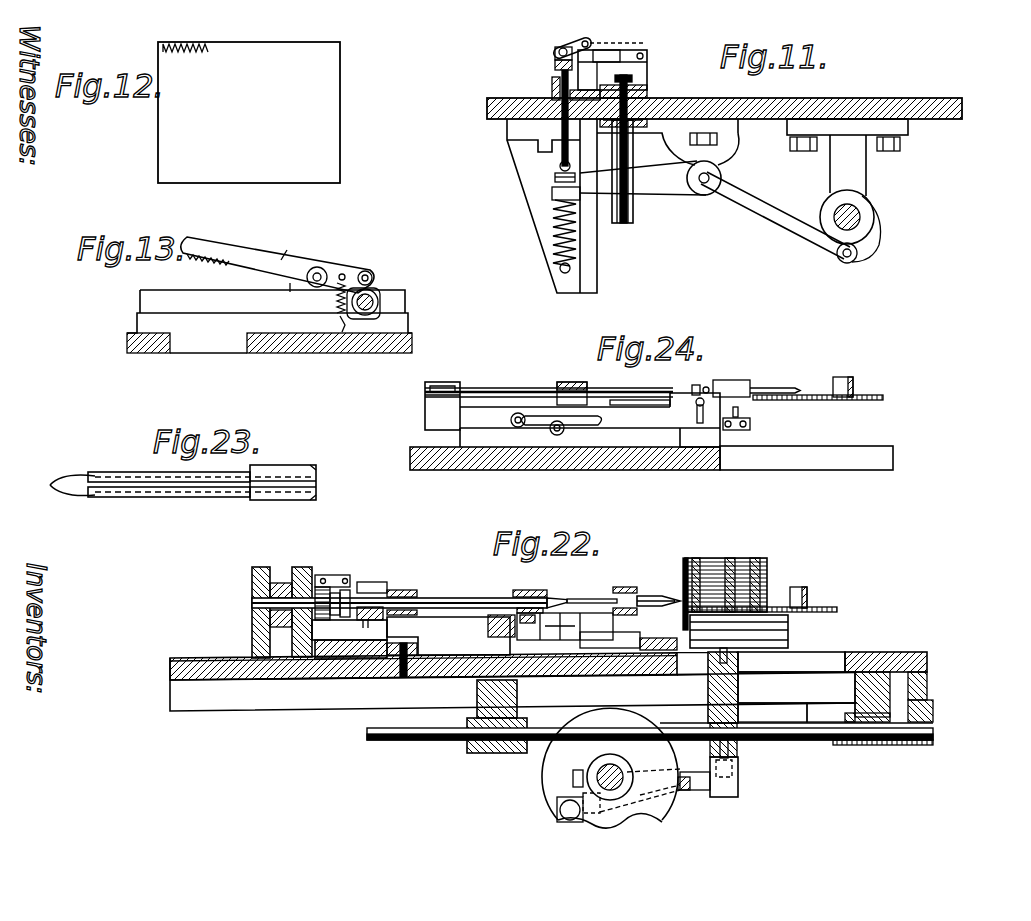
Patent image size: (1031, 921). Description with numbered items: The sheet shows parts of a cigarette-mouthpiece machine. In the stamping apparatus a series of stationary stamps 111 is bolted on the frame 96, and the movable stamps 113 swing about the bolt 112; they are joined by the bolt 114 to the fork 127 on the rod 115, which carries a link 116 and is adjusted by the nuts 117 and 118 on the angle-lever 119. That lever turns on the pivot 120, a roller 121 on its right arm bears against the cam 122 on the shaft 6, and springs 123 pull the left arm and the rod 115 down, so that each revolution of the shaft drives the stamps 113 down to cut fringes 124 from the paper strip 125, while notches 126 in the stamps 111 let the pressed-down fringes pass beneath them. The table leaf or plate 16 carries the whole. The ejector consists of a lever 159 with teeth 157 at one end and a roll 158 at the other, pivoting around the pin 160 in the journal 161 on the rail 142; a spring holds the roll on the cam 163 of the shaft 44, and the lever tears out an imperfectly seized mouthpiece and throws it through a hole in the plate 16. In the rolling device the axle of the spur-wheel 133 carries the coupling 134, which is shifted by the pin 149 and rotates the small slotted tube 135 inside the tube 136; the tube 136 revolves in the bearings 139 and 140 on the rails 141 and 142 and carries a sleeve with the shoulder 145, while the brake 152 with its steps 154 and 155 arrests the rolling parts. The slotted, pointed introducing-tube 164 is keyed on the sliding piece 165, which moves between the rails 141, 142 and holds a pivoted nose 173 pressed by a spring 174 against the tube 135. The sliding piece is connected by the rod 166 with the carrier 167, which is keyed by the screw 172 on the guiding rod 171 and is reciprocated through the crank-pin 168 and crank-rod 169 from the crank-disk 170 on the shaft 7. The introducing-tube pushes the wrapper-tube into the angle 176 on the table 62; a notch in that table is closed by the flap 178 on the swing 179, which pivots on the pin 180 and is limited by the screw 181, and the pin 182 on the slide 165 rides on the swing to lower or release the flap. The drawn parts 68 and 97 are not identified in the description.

In FIG. 11, the shaft 6 is at (835, 212).
In FIG. 22, the shaft 7 is at (626, 771).
In FIG. 11, the table leaf or plate 16 is at (805, 108).
In FIG. 13, the table leaf or plate 16 is at (165, 345).
In FIG. 13, the shaft 44 is at (379, 302).
In FIG. 24, the table 62 is at (845, 400).
In FIG. 22, the table 62 is at (843, 612).
In FIG. 22, the drum 68 is at (735, 558).
In FIG. 11, the frame 96 is at (647, 82).
In FIG. 11, the vertical rod 97 is at (631, 150).
In FIG. 11, the stamps 111 is at (650, 62).
In FIG. 11, the bolt 112 is at (592, 40).
In FIG. 11, the movable stamps 113 is at (576, 41).
In FIG. 11, the bolt 114 is at (558, 45).
In FIG. 11, the rod 115 is at (560, 130).
In FIG. 11, the link 116 is at (558, 165).
In FIG. 11, the nut 117 is at (553, 178).
In FIG. 11, the nut 118 is at (552, 200).
In FIG. 11, the angle-lever 119 is at (650, 185).
In FIG. 11, the pivot 120 is at (718, 172).
In FIG. 11, the roller 121 is at (849, 262).
In FIG. 11, the cam 122 is at (868, 222).
In FIG. 11, the springs 123 is at (556, 236).
In FIG. 11, the fringes 124 is at (628, 42).
In FIG. 12, the fringes 124 is at (200, 34).
In FIG. 11, the paper strip 125 is at (648, 52).
In FIG. 11, the notches 126 is at (610, 68).
In FIG. 11, the fork 127 is at (556, 65).
In FIG. 22, the spur-wheel 133 is at (254, 590).
In FIG. 22, the coupling 134 is at (327, 574).
In FIG. 24, the small slotted tube 135 is at (625, 386).
In FIG. 22, the small slotted tube 135 is at (590, 594).
In FIG. 24, the tube 136 is at (515, 393).
In FIG. 22, the tube 136 is at (505, 597).
In FIG. 22, the bearing 139 is at (464, 598).
In FIG. 22, the bearing 140 is at (575, 592).
In FIG. 13, the rail 141 is at (269, 311).
In FIG. 22, the rail 141 is at (465, 625).
In FIG. 24, the rail 142 is at (423, 409).
In FIG. 22, the shoulder 145 is at (349, 639).
In FIG. 22, the pin 149 is at (345, 578).
In FIG. 22, the brake 152 is at (362, 590).
In FIG. 22, the step 154 is at (374, 590).
In FIG. 22, the step 155 is at (382, 596).
In FIG. 13, the teeth 157 is at (235, 242).
In FIG. 13, the roll 158 is at (372, 278).
In FIG. 13, the lever 159 is at (295, 244).
In FIG. 13, the pin 160 is at (320, 269).
In FIG. 13, the journal 161 is at (290, 283).
In FIG. 13, the cam 163 is at (361, 338).
In FIG. 24, the introducing-tube 164 is at (795, 392).
In FIG. 23, the introducing-tube 164 is at (162, 487).
In FIG. 22, the introducing-tube 164 is at (660, 586).
In FIG. 24, the sliding piece 165 is at (660, 400).
In FIG. 22, the sliding piece 165 is at (535, 590).
In FIG. 22, the rod 166 is at (705, 656).
In FIG. 22, the support or carrier 167 is at (796, 687).
In FIG. 22, the crank-pin 168 is at (739, 788).
In FIG. 22, the crank-rod 169 is at (692, 791).
In FIG. 22, the crank-disk 170 is at (652, 806).
In FIG. 22, the rod 171 is at (423, 740).
In FIG. 22, the screw 172 is at (738, 757).
In FIG. 22, the pivoted nose or shoulder 173 is at (628, 640).
In FIG. 22, the spring 174 is at (575, 652).
In FIG. 24, the angle 176 is at (854, 382).
In FIG. 22, the angle 176 is at (804, 590).
In FIG. 24, the flap 178 is at (750, 425).
In FIG. 24, the oscillator or swing 179 is at (612, 425).
In FIG. 24, the pin 180 is at (520, 427).
In FIG. 24, the screw 181 is at (697, 406).
In FIG. 24, the pin 182 is at (708, 388).